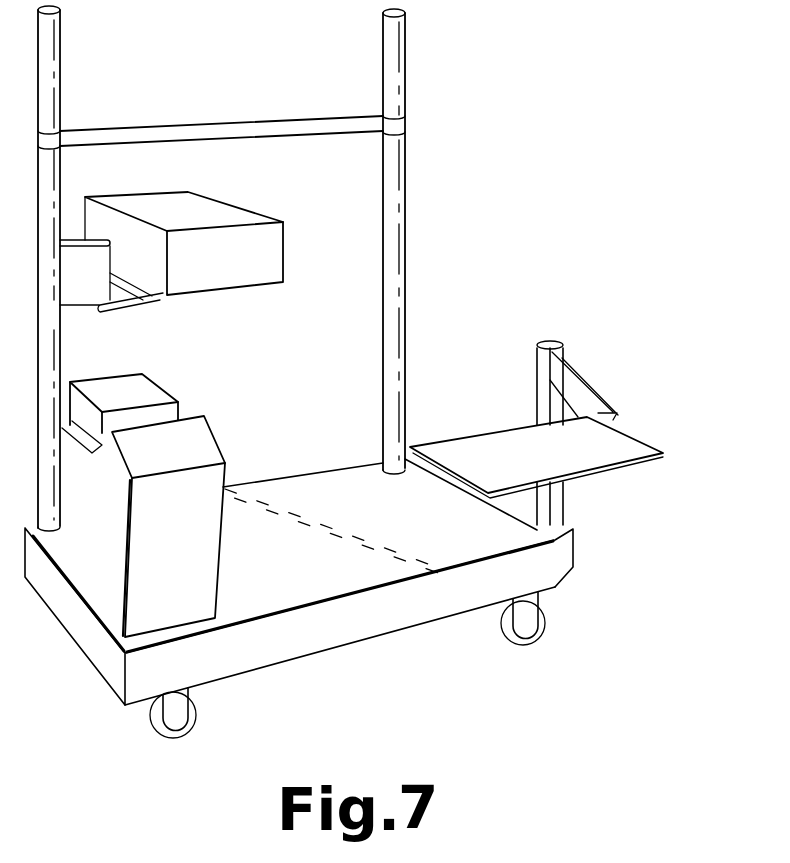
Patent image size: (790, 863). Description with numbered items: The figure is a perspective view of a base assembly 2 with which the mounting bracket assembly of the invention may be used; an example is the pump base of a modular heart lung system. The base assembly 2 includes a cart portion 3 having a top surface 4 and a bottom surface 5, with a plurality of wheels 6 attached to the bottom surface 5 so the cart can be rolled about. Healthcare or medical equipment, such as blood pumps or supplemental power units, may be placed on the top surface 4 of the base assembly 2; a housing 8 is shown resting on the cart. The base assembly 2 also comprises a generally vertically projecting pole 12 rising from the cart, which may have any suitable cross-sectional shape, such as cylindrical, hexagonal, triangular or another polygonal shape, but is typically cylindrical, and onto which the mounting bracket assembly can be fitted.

The base assembly 2 is at (470, 165).
The vertically projecting pole 12 is at (393, 48).
The cart portion 3 is at (457, 613).
The top surface 4 is at (370, 577).
The bottom surface 5 is at (320, 654).
The wheels 6 is at (172, 730).
The instrument housing 8 is at (160, 610).